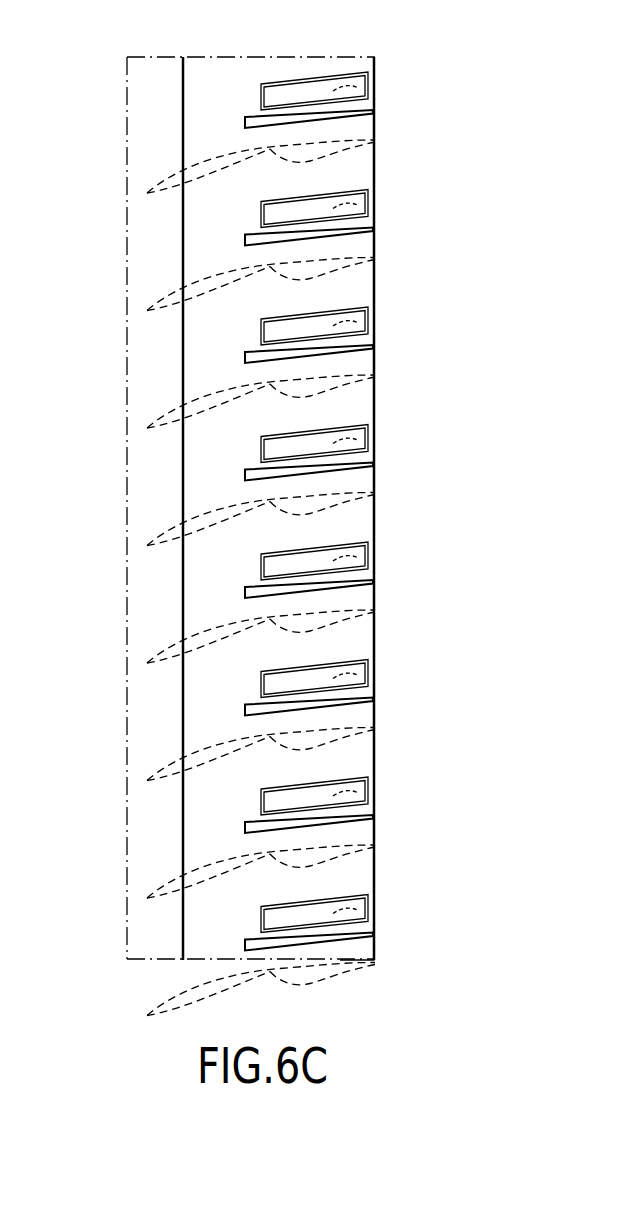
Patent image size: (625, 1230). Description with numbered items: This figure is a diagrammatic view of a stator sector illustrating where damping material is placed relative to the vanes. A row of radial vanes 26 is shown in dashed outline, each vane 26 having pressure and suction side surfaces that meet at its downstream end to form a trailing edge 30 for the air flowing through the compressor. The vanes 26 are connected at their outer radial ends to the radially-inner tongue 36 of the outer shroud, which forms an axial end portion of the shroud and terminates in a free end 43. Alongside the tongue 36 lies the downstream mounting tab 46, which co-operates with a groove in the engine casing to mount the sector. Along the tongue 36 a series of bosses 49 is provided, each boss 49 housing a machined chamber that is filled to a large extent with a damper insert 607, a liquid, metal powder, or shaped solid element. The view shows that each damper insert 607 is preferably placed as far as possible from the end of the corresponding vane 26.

The radial vane 26 is at (150, 175).
The trailing edge 30 is at (376, 142).
The radially-inner tongue 36 is at (223, 80).
The free end 43 is at (375, 948).
The downstream mounting tab 46 is at (157, 80).
The boss 49 is at (338, 74).
The damper insert 607 is at (374, 110).